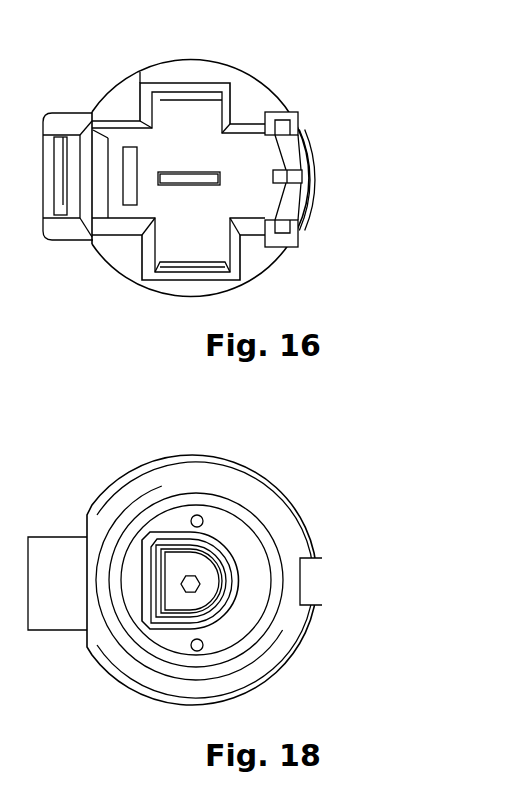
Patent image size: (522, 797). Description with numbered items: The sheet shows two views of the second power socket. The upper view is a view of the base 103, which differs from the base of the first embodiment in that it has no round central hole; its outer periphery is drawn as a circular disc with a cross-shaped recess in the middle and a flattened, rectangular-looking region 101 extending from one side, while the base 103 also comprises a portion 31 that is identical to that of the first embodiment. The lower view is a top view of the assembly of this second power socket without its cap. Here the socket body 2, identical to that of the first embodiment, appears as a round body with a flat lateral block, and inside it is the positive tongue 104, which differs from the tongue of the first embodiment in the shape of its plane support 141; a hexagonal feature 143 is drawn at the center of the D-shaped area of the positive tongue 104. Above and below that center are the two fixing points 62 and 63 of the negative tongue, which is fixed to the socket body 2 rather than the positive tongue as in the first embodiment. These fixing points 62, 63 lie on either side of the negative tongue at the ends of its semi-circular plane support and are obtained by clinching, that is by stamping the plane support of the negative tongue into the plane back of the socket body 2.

In FIG. 16, the base 103 is at (188, 67).
In FIG. 18, the base 103 is at (152, 466).
In FIG. 16, the connector housing portion 101 is at (63, 125).
In FIG. 18, the socket body 2 is at (138, 512).
In FIG. 18, the portion 31 is at (178, 473).
In FIG. 18, the fixing point 63 is at (203, 515).
In FIG. 18, the fixing point 62 is at (192, 650).
In FIG. 18, the positive tongue 104 is at (212, 581).
In FIG. 18, the plane support 141 is at (193, 604).
In FIG. 18, the hexagonal projection 143 is at (199, 590).